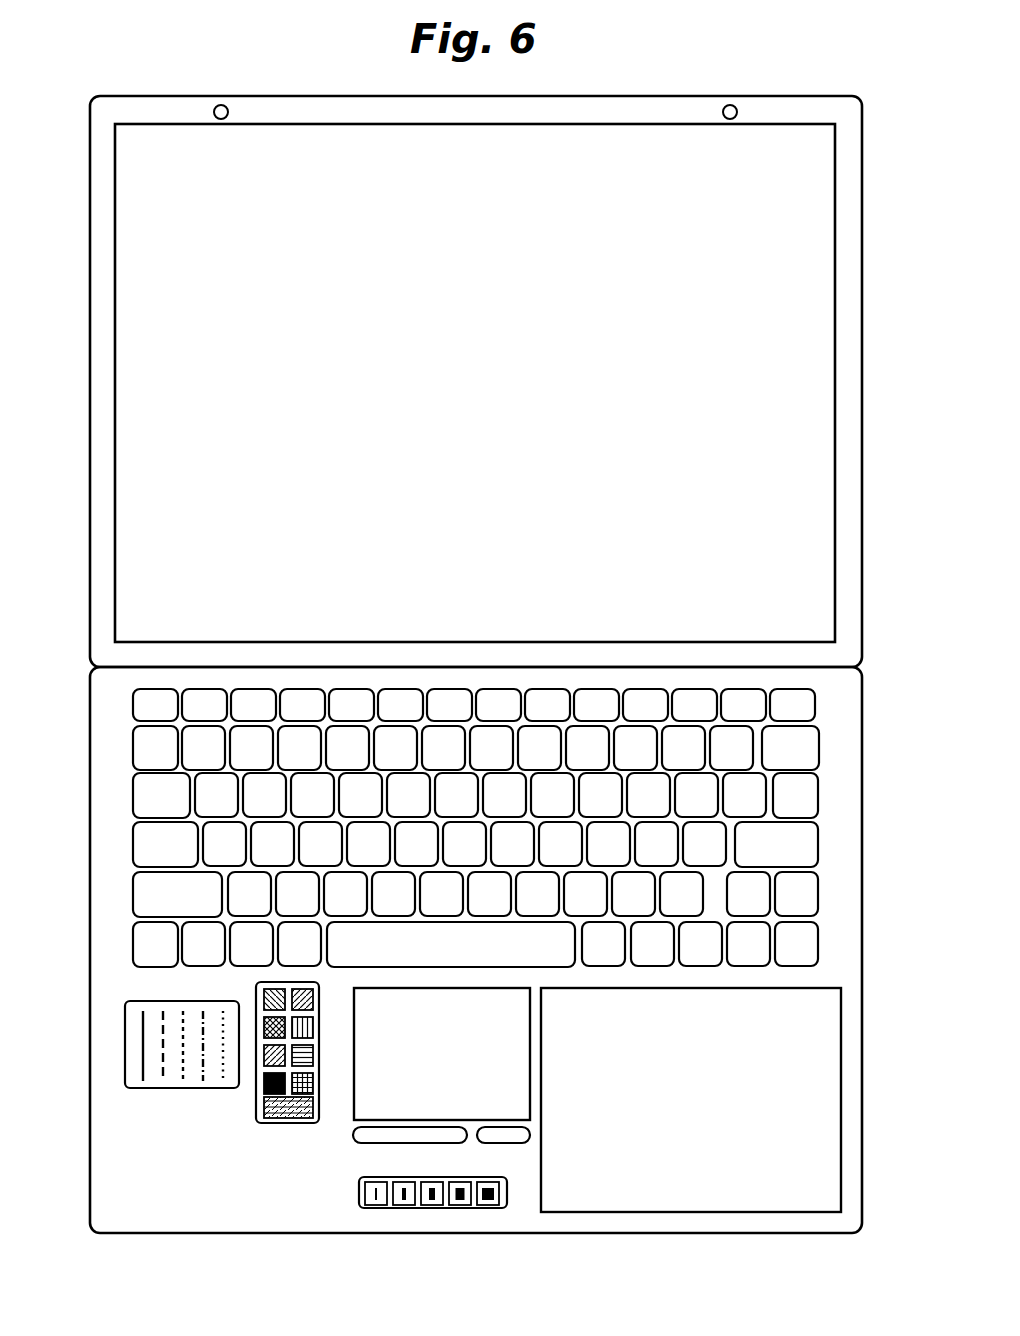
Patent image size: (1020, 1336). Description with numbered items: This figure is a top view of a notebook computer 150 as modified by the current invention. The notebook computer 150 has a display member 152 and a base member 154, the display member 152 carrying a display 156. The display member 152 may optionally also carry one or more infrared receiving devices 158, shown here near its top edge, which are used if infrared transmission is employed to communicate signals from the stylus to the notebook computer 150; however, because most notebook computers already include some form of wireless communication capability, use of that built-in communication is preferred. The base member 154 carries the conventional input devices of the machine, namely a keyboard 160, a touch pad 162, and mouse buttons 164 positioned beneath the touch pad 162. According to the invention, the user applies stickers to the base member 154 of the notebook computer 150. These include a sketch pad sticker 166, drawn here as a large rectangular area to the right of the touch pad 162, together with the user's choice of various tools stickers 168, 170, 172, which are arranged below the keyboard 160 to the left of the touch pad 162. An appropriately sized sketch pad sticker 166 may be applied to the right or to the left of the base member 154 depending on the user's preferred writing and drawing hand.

The notebook computer 150 is at (592, 86).
The display member 152 is at (90, 244).
The base member 154 is at (90, 793).
The display 156 is at (622, 276).
The infrared receiving devices 158 is at (225, 105).
The keyboard 160 is at (840, 738).
The touch pad 162 is at (432, 1034).
The mouse buttons 164 is at (493, 1127).
The sketch pad sticker 166 is at (748, 1050).
The tools sticker 168 is at (170, 1090).
The tools sticker 170 is at (267, 1125).
The tools sticker 172 is at (359, 1203).